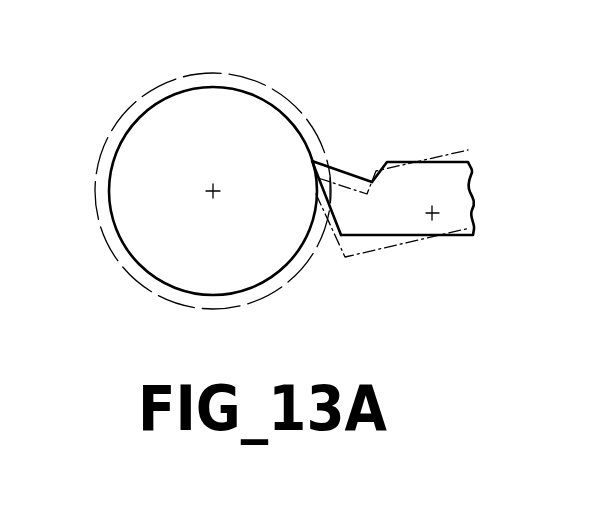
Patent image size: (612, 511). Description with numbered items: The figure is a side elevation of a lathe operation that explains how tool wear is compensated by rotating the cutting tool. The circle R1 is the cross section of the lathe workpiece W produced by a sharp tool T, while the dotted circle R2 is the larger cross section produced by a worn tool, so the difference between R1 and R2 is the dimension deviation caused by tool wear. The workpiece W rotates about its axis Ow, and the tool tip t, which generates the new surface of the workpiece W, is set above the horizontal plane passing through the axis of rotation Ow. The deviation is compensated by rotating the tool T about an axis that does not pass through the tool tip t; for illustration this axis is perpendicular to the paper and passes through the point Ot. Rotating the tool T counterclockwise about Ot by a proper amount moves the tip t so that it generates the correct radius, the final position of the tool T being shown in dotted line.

The lathe workpiece W is at (178, 157).
The circle of sharp-tool cross section R1 is at (220, 87).
The circle of worn-tool cross section R2 is at (275, 90).
The axis of rotation of the workpiece Ow is at (210, 188).
The cutting tool T is at (393, 211).
The tool tip t is at (317, 157).
The axis of rotation of the tool Ot is at (433, 216).